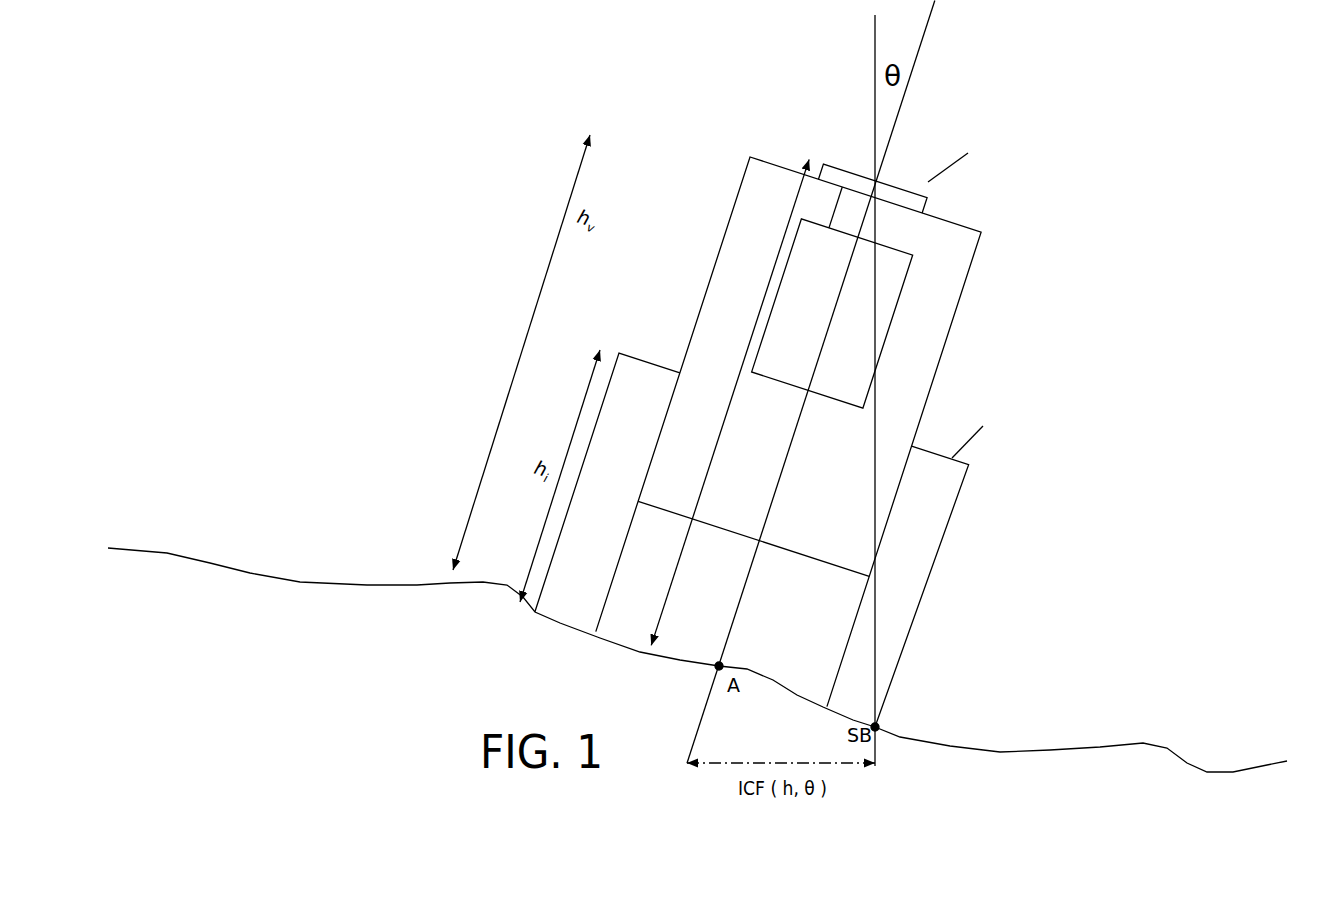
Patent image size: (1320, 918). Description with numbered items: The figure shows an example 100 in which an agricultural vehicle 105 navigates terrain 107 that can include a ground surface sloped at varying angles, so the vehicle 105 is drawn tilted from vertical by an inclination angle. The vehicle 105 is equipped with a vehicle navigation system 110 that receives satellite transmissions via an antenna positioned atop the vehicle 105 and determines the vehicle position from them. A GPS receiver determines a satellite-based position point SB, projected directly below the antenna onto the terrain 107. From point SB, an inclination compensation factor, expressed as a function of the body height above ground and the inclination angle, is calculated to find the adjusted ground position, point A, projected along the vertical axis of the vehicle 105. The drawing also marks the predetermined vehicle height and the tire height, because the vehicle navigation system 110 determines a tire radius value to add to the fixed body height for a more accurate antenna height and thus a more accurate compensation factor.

The example 100 is at (818, 408).
The agricultural vehicle 105 is at (758, 421).
The terrain 107 is at (1143, 809).
The vehicle navigation system 110 is at (814, 315).